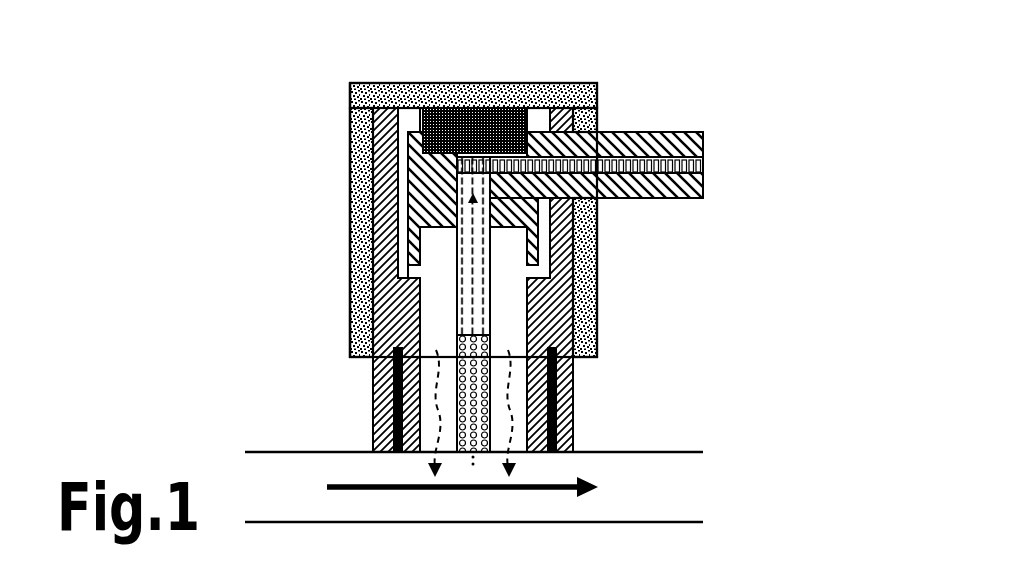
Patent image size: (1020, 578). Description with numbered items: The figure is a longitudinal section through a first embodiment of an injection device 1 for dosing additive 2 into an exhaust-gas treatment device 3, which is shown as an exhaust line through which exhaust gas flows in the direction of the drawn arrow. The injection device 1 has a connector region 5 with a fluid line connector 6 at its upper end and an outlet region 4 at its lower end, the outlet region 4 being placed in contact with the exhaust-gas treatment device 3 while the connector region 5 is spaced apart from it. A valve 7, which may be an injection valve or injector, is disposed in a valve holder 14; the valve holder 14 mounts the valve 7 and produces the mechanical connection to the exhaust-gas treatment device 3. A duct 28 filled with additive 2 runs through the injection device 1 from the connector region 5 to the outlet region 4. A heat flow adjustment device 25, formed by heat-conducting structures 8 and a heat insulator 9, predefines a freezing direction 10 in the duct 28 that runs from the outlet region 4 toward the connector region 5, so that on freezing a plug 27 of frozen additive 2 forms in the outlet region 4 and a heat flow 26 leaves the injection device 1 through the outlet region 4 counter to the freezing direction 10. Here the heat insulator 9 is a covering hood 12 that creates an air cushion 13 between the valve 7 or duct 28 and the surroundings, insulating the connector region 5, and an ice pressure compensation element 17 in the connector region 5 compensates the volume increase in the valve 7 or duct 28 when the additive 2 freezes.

The injection device 1 is at (217, 58).
The additive 2 is at (705, 167).
The exhaust-gas treatment device 3 is at (680, 450).
The outlet region 4 is at (455, 470).
The connector region 5 is at (492, 58).
The fluid line connector 6 is at (705, 132).
The valve 7 is at (420, 310).
The heat-conducting structures 8 is at (375, 373).
The heat insulator 9 is at (350, 162).
The freezing direction 10 is at (527, 292).
The covering hood 12 is at (350, 182).
The air cushion 13 is at (406, 118).
The valve holder 14 is at (573, 365).
The ice pressure compensation element 17 is at (443, 83).
The heat flow adjustment device 25 is at (350, 108).
The heat flow 26 is at (515, 435).
The plug 27 is at (492, 402).
The duct 28 is at (475, 313).